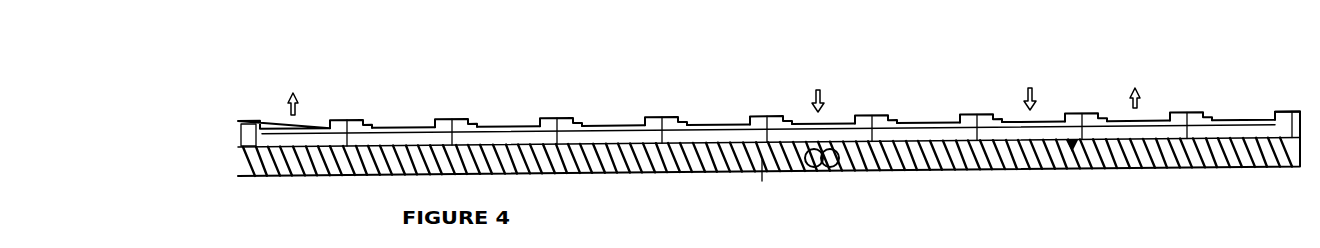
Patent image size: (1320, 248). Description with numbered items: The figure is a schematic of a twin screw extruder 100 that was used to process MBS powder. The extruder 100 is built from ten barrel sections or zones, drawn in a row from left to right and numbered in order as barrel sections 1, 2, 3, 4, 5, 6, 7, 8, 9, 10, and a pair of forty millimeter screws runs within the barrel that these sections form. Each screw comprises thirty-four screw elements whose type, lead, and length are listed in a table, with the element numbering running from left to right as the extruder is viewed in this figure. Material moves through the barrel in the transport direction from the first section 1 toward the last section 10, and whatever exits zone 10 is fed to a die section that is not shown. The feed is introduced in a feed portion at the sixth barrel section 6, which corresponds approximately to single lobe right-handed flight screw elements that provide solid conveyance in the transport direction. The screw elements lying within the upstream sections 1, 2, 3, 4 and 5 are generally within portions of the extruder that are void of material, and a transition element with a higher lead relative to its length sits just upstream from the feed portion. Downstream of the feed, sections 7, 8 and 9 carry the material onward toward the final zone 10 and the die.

The twin screw extruder 100 is at (232, 85).
The barrel section 1 is at (351, 133).
The barrel section 2 is at (456, 132).
The barrel section 3 is at (561, 131).
The barrel section 4 is at (666, 130).
The barrel section 5 is at (771, 129).
The barrel section 6 is at (876, 128).
The barrel section 7 is at (981, 127).
The barrel section 8 is at (1086, 126).
The barrel section 9 is at (1191, 125).
The barrel section 10 is at (1287, 124).